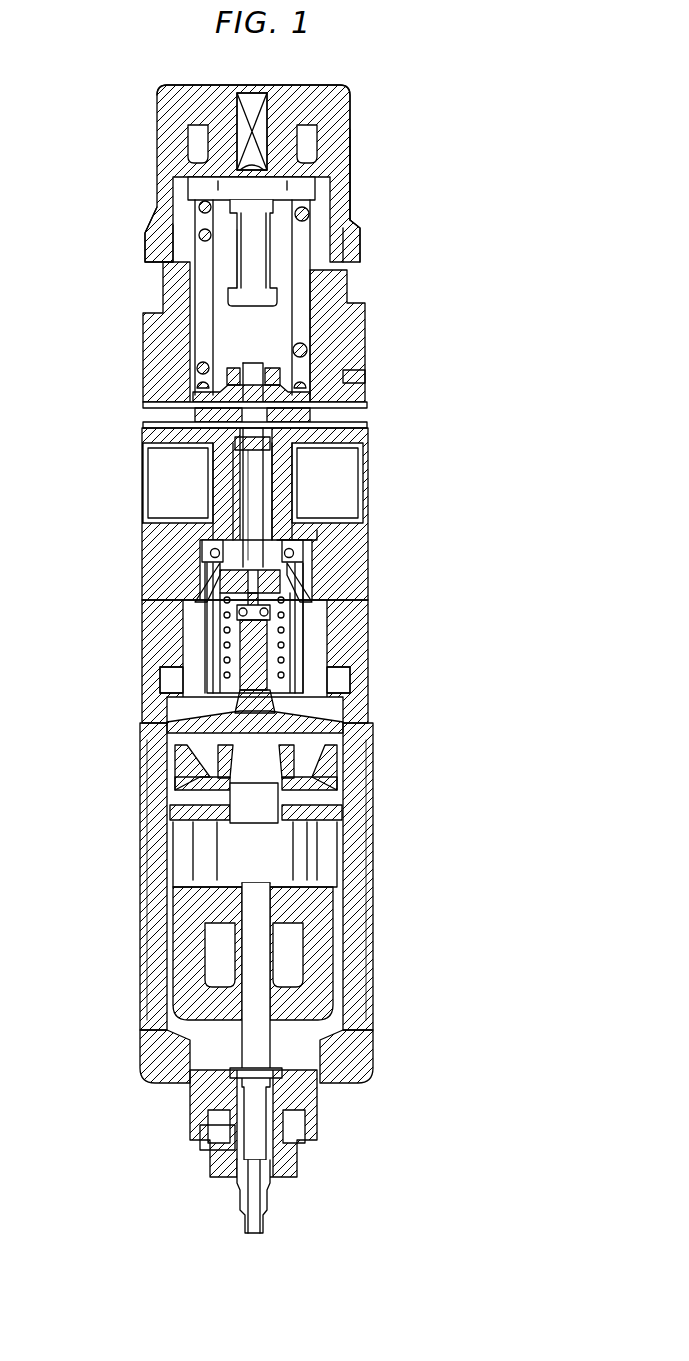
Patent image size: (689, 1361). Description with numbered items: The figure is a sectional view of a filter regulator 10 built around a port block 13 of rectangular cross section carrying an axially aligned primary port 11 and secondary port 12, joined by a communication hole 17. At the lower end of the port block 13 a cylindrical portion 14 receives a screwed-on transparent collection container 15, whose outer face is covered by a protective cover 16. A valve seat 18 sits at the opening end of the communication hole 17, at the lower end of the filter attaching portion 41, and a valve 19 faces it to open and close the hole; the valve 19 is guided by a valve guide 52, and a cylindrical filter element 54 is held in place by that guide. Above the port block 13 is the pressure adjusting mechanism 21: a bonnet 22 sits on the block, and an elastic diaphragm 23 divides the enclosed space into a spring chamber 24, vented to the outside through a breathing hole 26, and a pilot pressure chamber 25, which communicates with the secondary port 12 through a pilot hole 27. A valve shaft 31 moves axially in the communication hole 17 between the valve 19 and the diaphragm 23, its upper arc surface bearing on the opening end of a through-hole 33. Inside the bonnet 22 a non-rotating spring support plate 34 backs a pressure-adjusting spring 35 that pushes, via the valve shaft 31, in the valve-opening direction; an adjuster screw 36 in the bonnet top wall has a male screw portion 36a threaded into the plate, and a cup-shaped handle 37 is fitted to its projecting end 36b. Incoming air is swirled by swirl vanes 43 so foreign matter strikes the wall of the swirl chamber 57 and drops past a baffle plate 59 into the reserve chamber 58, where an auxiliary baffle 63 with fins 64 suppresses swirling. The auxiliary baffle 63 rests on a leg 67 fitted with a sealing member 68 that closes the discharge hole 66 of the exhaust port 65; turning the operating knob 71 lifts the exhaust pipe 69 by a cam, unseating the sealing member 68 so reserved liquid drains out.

The filter regulator 10 is at (358, 80).
The pressure adjusting mechanism 21 is at (150, 160).
The projecting end 36b is at (238, 104).
The bonnet 22 is at (150, 218).
The handle 37 is at (345, 112).
The spring support plate 34 is at (307, 192).
The pressure-adjusting spring 35 is at (300, 215).
The adjuster screw 36 is at (262, 268).
The male screw portion 36a is at (247, 262).
The spring chamber 24 is at (313, 317).
The breathing hole 26 is at (353, 375).
The diaphragm 23 is at (195, 398).
The through-hole 33 is at (242, 365).
The pilot pressure chamber 25 is at (200, 425).
The port block 13 is at (150, 543).
The primary port 11 is at (163, 483).
The secondary port 12 is at (350, 503).
The communication hole 17 is at (230, 512).
The pilot hole 27 is at (310, 442).
The valve shaft 31 is at (257, 525).
The valve seat 18 is at (205, 560).
The valve 19 is at (300, 577).
The filter attaching portion 41 is at (287, 542).
The swirl vanes 43 is at (195, 597).
The cylindrical portion 14 is at (345, 643).
The valve guide 52 is at (195, 710).
The filter element 54 is at (195, 663).
The swirl chamber 57 is at (317, 670).
The baffle plate 59 is at (320, 718).
The protective cover 16 is at (367, 780).
The collection container 15 is at (350, 813).
The exhaust port 65 is at (330, 1073).
The fins 64 is at (183, 763).
The auxiliary baffle 63 is at (213, 812).
The reserve chamber 58 is at (330, 860).
The leg 67 is at (320, 957).
The sealing member 68 is at (235, 1043).
The discharge hole 66 is at (220, 1110).
The exhaust pipe 69 is at (230, 1137).
The operating knob 71 is at (317, 1120).